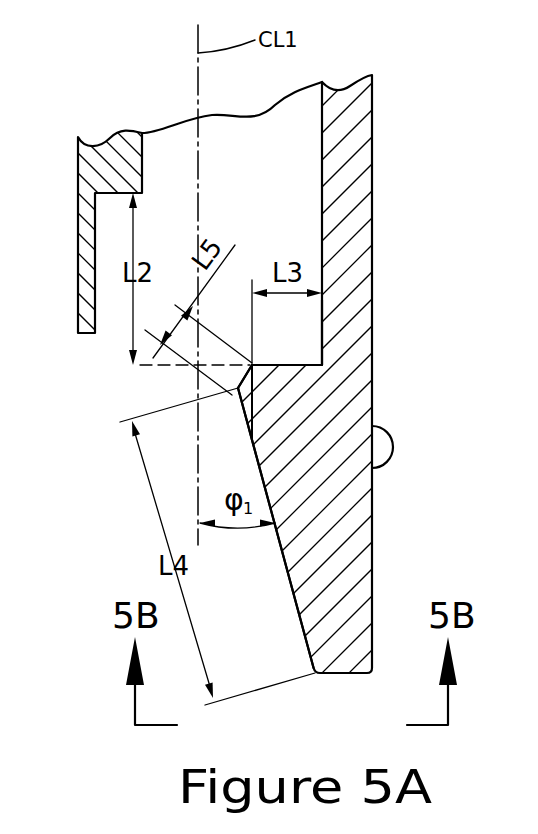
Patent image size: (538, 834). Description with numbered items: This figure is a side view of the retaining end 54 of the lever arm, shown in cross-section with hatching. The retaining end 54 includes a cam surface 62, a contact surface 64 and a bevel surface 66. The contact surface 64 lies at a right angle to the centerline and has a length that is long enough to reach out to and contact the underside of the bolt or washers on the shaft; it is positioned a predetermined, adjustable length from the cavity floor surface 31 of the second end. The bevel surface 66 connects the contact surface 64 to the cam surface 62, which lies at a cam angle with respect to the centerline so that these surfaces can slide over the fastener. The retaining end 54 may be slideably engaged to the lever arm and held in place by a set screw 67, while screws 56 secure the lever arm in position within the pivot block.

The cavity floor surface 31 is at (118, 195).
The retaining end 54 is at (405, 173).
The screws 56 is at (0, 662).
The cam surface 62 is at (296, 599).
The contact surface 64 is at (289, 363).
The bevel surface 66 is at (238, 386).
The set screw 67 is at (378, 443).